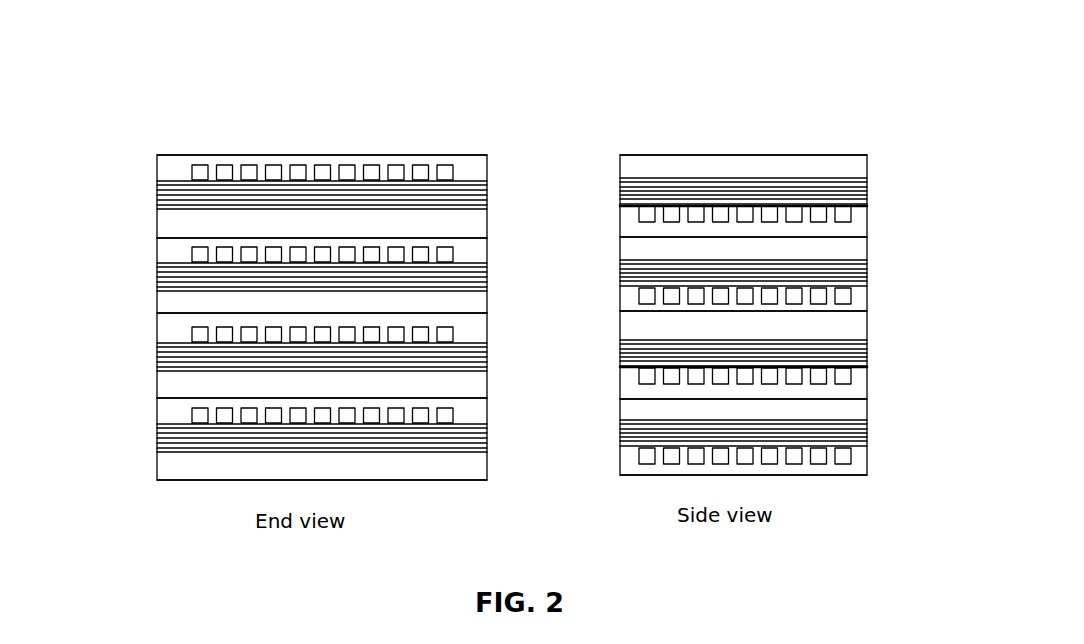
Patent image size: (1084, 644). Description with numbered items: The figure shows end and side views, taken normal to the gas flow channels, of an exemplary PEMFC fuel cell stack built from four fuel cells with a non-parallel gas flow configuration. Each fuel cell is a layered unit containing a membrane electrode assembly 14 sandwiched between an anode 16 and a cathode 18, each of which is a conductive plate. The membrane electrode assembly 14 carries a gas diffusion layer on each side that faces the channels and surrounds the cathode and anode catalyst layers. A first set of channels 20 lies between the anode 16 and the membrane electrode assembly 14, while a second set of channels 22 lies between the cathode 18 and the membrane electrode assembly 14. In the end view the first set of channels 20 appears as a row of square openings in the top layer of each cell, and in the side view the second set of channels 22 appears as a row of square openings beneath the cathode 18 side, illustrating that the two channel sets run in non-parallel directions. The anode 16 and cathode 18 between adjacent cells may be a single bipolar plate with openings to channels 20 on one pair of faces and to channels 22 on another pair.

The membrane electrode assembly 14 is at (618, 192).
The anode 16 is at (405, 266).
The cathode 18 is at (677, 352).
The first set of channels 20 is at (354, 266).
The second set of channels 22 is at (750, 234).